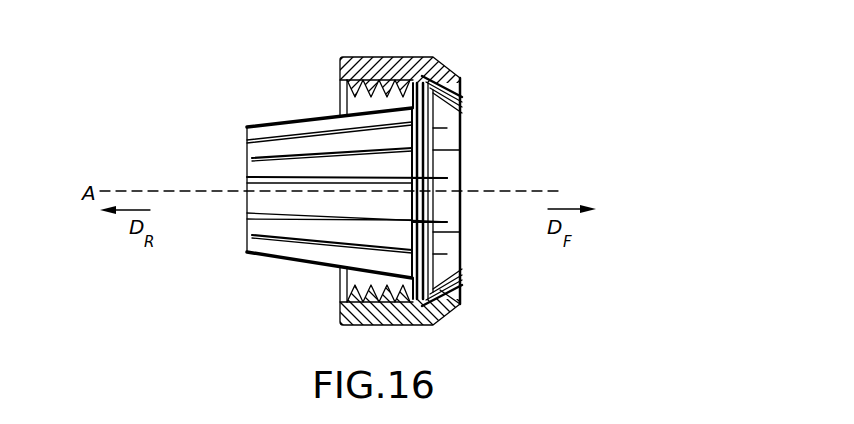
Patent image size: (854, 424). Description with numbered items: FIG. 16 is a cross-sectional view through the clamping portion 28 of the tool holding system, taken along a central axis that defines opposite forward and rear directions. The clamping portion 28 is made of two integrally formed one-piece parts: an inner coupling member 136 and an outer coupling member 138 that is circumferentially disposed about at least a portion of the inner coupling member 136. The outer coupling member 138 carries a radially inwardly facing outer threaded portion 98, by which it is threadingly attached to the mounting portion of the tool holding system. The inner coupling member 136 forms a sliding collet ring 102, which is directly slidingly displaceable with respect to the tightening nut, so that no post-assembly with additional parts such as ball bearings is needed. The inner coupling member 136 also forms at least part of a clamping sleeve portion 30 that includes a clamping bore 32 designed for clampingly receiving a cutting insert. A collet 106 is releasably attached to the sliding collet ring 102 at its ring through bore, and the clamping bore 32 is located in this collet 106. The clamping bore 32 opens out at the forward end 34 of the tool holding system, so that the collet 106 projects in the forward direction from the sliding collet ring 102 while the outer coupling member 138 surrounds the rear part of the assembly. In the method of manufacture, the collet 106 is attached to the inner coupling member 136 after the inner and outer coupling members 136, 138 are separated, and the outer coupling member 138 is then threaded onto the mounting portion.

The clamping portion 28 is at (543, 48).
The clamping sleeve portion 30 is at (463, 113).
The clamping bore 32 is at (476, 170).
The forward end 34 is at (486, 261).
The outer threaded portion 98 is at (340, 110).
The collet 106 is at (316, 203).
The outer coupling member 138 is at (408, 50).
The inner coupling member 136 is at (515, 327).
The sliding collet ring 102 is at (463, 285).